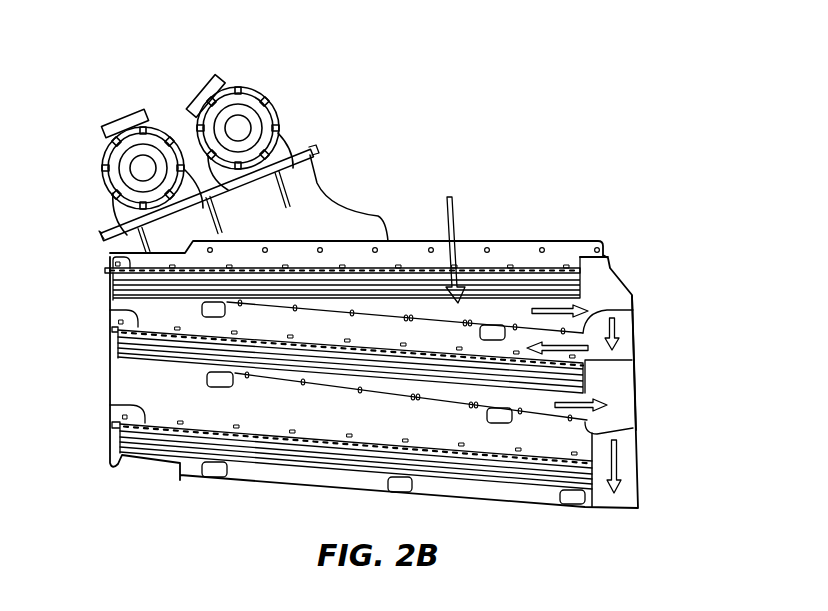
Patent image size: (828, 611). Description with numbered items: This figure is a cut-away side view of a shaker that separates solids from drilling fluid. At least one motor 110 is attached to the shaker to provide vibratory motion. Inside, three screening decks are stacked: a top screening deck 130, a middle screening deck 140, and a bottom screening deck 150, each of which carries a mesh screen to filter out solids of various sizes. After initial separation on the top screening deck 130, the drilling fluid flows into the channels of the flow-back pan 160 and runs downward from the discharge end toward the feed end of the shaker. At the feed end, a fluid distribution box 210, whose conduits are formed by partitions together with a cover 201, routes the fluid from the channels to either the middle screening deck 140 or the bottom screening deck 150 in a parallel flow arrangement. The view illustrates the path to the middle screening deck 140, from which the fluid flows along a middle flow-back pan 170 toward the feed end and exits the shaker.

The motor 110 is at (118, 133).
The top screening deck 130 is at (112, 258).
The middle screening deck 140 is at (112, 312).
The bottom screening deck 150 is at (112, 407).
The flow-back pan 160 is at (633, 310).
The middle flow-back pan 170 is at (633, 428).
The cover 201 is at (634, 337).
The fluid distribution box 210 is at (636, 398).